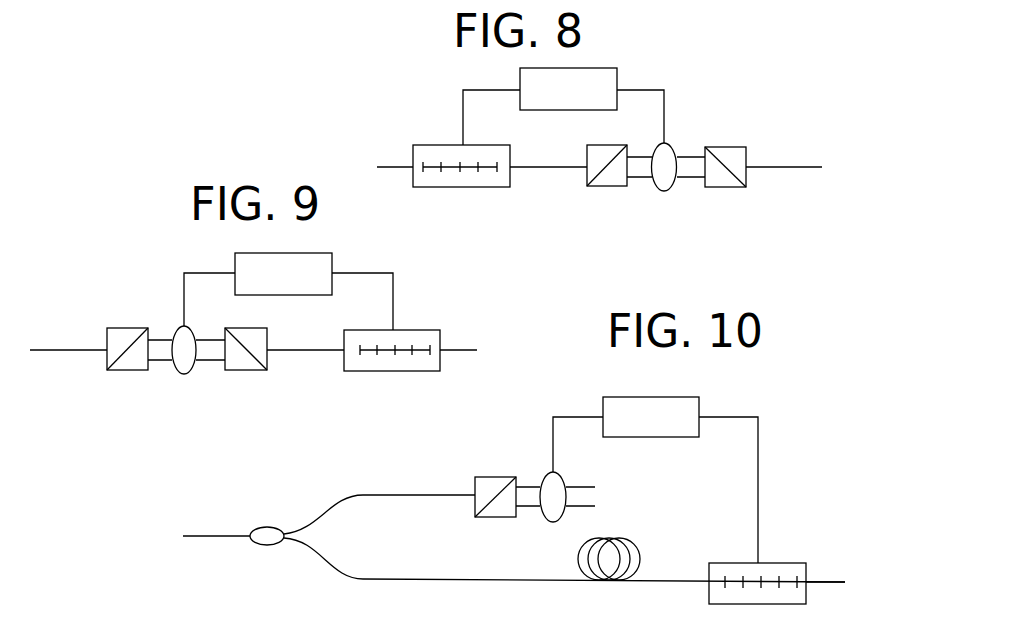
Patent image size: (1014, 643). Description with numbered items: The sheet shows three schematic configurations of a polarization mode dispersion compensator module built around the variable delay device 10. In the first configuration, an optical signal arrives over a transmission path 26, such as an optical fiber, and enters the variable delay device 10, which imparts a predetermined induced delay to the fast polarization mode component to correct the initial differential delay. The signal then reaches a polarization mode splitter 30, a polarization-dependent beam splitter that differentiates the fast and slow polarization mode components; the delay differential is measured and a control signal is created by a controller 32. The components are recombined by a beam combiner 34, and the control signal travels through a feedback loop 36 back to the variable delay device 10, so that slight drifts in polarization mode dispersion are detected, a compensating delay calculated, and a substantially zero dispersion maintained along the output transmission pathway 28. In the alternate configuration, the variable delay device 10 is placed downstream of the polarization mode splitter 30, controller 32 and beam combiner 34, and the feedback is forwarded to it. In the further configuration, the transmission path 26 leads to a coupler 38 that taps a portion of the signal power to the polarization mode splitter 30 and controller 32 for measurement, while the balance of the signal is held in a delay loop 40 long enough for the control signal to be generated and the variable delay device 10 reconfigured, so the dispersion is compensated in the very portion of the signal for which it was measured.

In FIG. 8, the variable delay device 10 is at (415, 150).
In FIG. 9, the variable delay device 10 is at (400, 366).
In FIG. 10, the variable delay device 10 is at (735, 567).
In FIG. 8, the transmission path 26 is at (398, 168).
In FIG. 9, the transmission path 26 is at (72, 352).
In FIG. 10, the transmission path 26 is at (215, 535).
In FIG. 8, the output transmission pathway 28 is at (768, 166).
In FIG. 9, the output transmission pathway 28 is at (462, 350).
In FIG. 10, the output transmission pathway 28 is at (823, 582).
In FIG. 8, the polarization mode splitter 30 is at (610, 180).
In FIG. 9, the polarization mode splitter 30 is at (135, 366).
In FIG. 10, the polarization mode splitter 30 is at (476, 503).
In FIG. 8, the controller 32 is at (607, 85).
In FIG. 9, the controller 32 is at (240, 256).
In FIG. 10, the controller 32 is at (690, 408).
In FIG. 8, the beam combiner 34 is at (717, 178).
In FIG. 9, the beam combiner 34 is at (243, 365).
In FIG. 8, the feedback loop 36 is at (463, 116).
In FIG. 9, the feedback loop 36 is at (393, 293).
In FIG. 10, the feedback loop 36 is at (760, 486).
In FIG. 10, the coupler 38 is at (262, 540).
In FIG. 10, the delay loop 40 is at (640, 538).